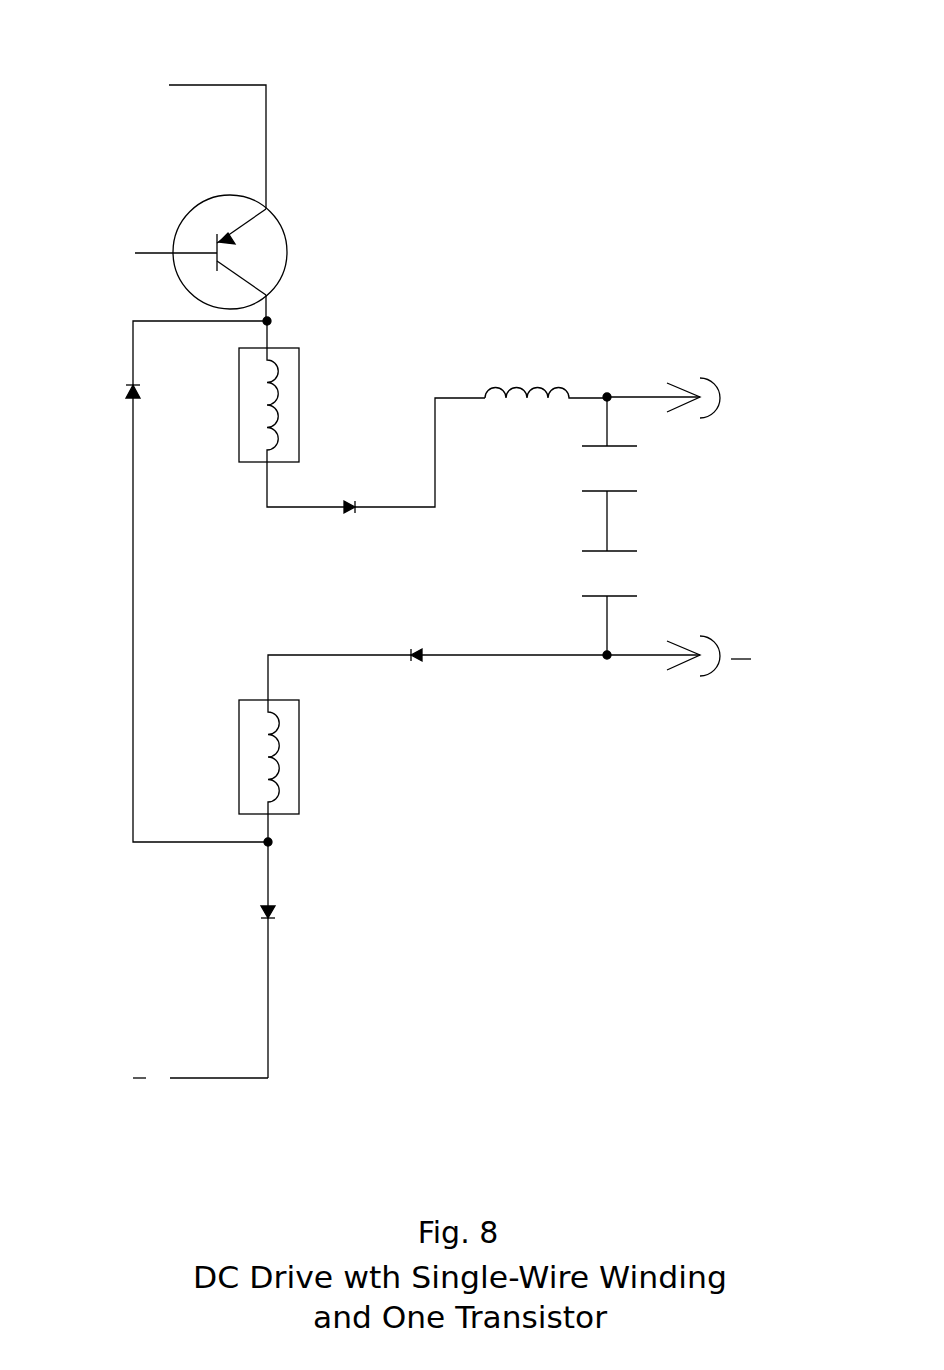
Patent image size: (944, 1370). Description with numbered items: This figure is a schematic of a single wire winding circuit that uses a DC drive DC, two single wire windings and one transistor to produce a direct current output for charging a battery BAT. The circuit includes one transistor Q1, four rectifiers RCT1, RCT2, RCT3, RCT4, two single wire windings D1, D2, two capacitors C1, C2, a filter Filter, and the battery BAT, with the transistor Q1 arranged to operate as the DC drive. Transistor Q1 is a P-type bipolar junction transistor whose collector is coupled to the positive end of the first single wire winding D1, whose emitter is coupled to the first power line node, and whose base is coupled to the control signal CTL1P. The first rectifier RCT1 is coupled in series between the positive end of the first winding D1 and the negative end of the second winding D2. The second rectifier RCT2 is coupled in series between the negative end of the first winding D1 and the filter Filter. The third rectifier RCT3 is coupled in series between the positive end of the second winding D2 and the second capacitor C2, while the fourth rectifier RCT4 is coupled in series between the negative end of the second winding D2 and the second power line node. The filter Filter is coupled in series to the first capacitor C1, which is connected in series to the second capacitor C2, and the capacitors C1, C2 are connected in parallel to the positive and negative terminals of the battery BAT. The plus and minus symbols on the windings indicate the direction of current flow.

The DC drive DC is at (197, 542).
The transistor Q1 is at (252, 258).
The control signal CTL1P is at (130, 255).
The first rectifier RCT1 is at (93, 394).
The second rectifier RCT2 is at (397, 475).
The third rectifier RCT3 is at (437, 676).
The fourth rectifier RCT4 is at (228, 960).
The first single wire winding D1 is at (280, 414).
The second single wire winding D2 is at (278, 763).
The filter Filter is at (546, 370).
The first capacitor C1 is at (587, 474).
The second capacitor C2 is at (587, 603).
The battery BAT is at (721, 527).